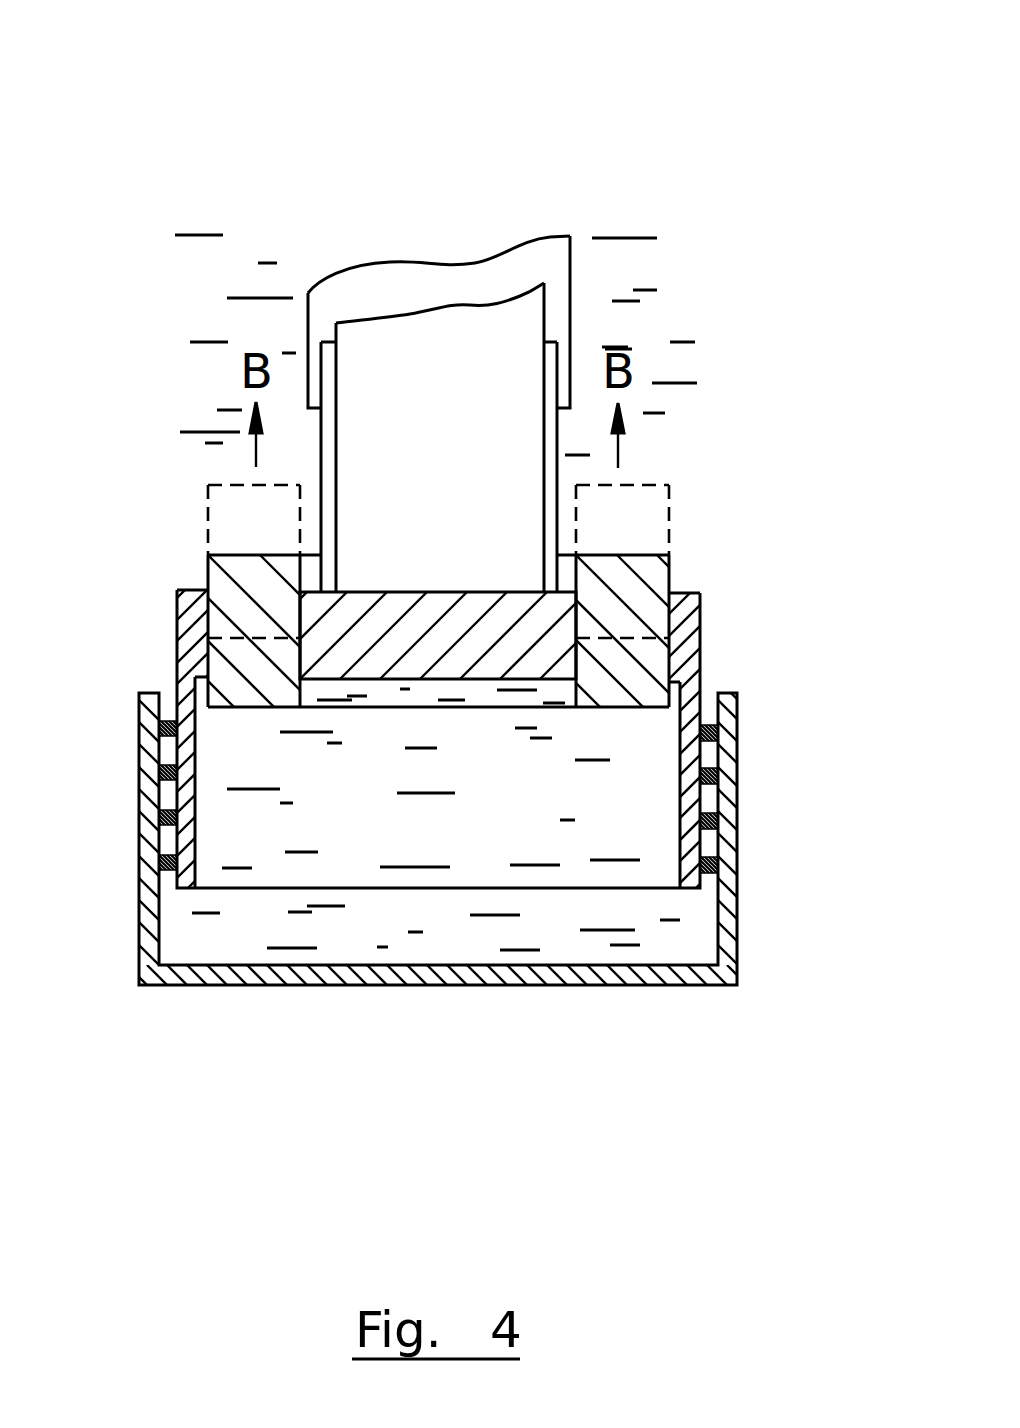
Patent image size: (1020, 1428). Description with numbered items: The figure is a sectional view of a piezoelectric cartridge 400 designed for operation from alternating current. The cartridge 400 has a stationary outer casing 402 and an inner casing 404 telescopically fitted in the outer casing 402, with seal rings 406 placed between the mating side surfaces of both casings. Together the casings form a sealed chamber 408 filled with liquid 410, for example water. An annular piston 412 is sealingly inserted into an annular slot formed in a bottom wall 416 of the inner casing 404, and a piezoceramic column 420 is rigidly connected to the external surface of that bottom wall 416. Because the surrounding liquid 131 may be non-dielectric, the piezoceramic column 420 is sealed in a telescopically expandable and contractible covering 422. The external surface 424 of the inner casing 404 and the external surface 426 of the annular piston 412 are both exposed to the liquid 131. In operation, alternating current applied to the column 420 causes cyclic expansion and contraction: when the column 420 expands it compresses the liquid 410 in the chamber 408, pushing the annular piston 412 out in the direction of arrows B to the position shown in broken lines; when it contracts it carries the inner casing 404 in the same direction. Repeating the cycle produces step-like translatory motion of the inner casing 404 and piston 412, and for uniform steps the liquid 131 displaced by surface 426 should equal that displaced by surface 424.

The piezoelectric cartridge 400 is at (325, 165).
The piezoceramic column 420 is at (440, 322).
The covering 422 is at (570, 292).
The liquid 131 is at (630, 325).
The external surface of annular piston 426 is at (632, 557).
The annular piston 412 is at (668, 567).
The external surface of inner casing 424 is at (690, 593).
The inner casing 404 is at (700, 620).
The bottom wall 416 is at (700, 648).
The seal rings 406 is at (737, 703).
The outer casing 402 is at (728, 760).
The liquid 410 is at (657, 827).
The sealed chamber 408 is at (670, 943).